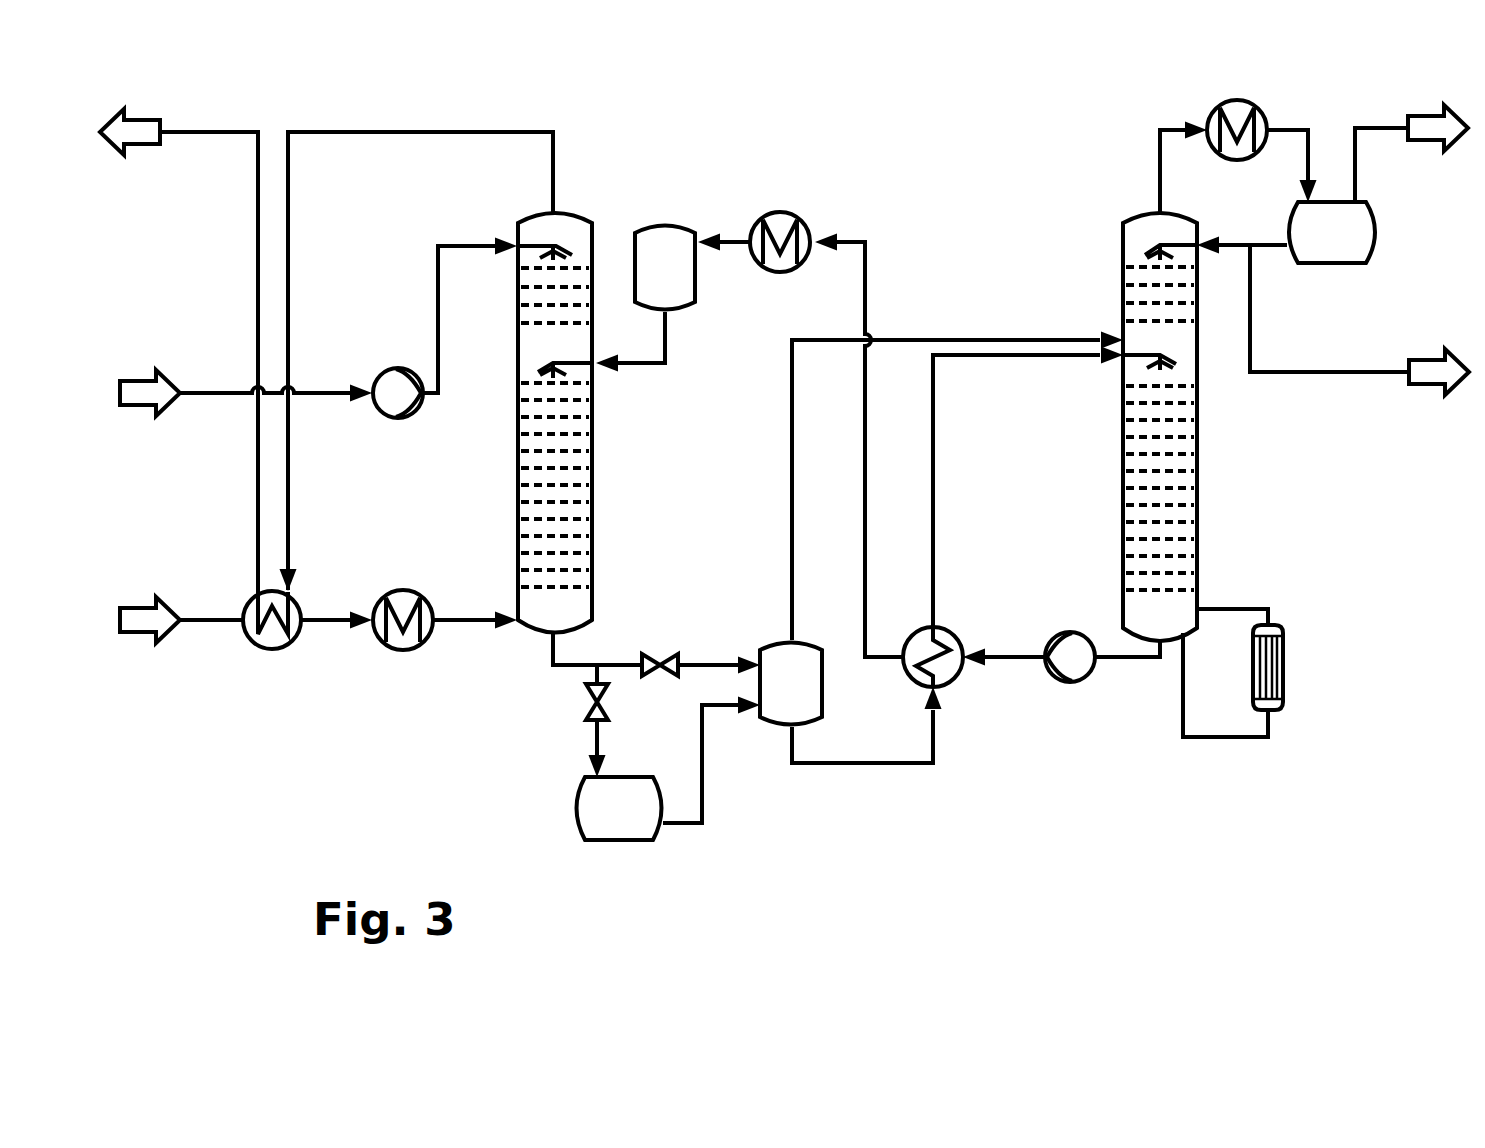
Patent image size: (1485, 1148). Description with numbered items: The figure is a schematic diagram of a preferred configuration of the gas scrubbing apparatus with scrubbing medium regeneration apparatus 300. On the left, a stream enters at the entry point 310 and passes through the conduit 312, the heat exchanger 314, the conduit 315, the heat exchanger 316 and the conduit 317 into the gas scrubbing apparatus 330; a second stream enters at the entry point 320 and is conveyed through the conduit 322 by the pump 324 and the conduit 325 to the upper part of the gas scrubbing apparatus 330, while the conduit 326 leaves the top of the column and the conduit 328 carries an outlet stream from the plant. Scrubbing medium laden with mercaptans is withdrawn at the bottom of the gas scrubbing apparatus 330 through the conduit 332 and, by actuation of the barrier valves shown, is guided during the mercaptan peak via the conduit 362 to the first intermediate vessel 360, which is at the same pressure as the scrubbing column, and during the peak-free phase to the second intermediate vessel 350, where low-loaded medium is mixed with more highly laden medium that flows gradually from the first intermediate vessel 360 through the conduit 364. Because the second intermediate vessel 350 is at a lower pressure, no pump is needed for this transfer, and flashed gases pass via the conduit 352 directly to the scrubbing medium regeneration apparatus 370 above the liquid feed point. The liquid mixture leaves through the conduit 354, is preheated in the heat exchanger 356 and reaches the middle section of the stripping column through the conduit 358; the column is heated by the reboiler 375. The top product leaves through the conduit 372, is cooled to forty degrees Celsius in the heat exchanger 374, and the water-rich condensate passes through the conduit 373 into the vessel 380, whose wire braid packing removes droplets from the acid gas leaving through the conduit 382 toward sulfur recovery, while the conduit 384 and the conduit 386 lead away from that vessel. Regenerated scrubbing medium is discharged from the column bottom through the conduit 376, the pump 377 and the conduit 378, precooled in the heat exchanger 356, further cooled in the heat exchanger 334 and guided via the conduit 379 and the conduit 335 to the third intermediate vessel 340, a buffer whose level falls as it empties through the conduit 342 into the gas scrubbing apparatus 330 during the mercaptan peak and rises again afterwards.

The gas scrubbing apparatus with scrubbing medium regeneration apparatus 300 is at (1240, 808).
The entry point 310 is at (150, 647).
The conduit 312 is at (210, 620).
The heat exchanger 314 is at (271, 644).
The conduit 315 is at (329, 620).
The heat exchanger 316 is at (403, 643).
The conduit 317 is at (462, 620).
The entry point 320 is at (150, 422).
The conduit 322 is at (247, 388).
The pump 324 is at (397, 417).
The conduit 325 is at (435, 270).
The conduit 326 is at (290, 133).
The conduit 328 is at (257, 133).
The gas scrubbing apparatus 330 is at (555, 423).
The conduit 332 is at (618, 663).
The heat exchanger 334 is at (780, 219).
The conduit 335 is at (728, 242).
The third intermediate vessel 340 is at (665, 268).
The conduit 342 is at (633, 367).
The second intermediate vessel 350 is at (791, 684).
The conduit 352 is at (790, 368).
The conduit 354 is at (875, 765).
The heat exchanger 356 is at (955, 633).
The conduit 358 is at (933, 360).
The first intermediate vessel 360 is at (619, 808).
The conduit 362 is at (597, 738).
The conduit 364 is at (700, 823).
The scrubbing medium regeneration apparatus 370 is at (1160, 427).
The conduit 372 is at (1157, 180).
The conduit 373 is at (1287, 125).
The heat exchanger 374 is at (1237, 107).
The reboiler 375 is at (1269, 673).
The conduit 376 is at (1130, 657).
The pump 377 is at (1067, 682).
The conduit 378 is at (1017, 657).
The conduit 379 is at (867, 307).
The vessel 380 is at (1332, 232).
The conduit 382 is at (1362, 135).
The conduit 384 is at (1242, 226).
The conduit 386 is at (1274, 372).